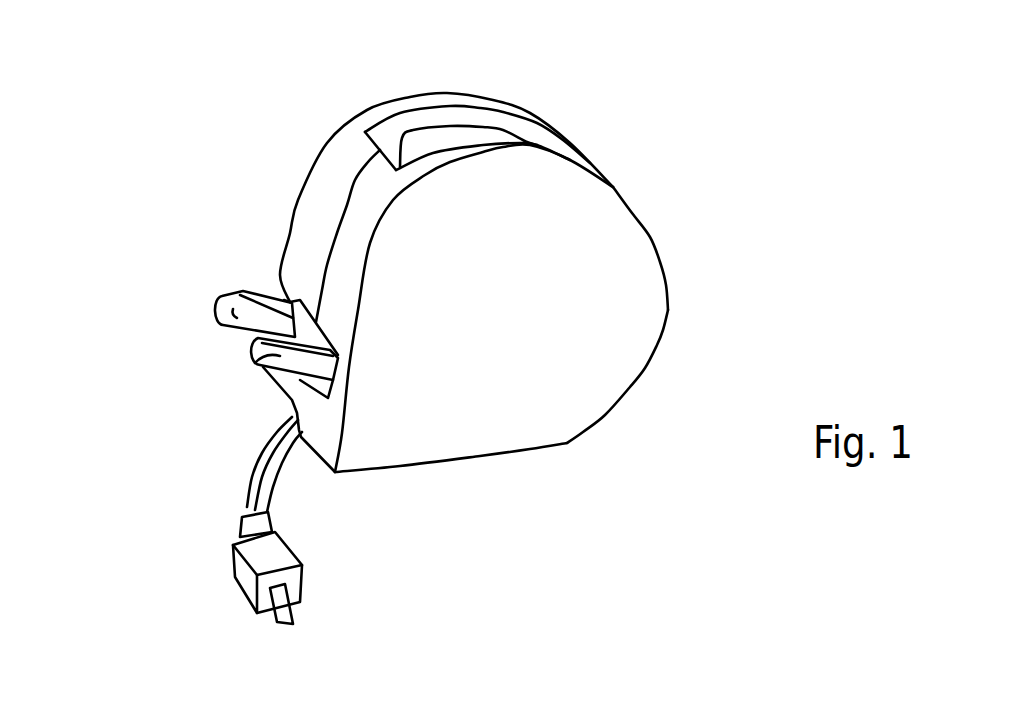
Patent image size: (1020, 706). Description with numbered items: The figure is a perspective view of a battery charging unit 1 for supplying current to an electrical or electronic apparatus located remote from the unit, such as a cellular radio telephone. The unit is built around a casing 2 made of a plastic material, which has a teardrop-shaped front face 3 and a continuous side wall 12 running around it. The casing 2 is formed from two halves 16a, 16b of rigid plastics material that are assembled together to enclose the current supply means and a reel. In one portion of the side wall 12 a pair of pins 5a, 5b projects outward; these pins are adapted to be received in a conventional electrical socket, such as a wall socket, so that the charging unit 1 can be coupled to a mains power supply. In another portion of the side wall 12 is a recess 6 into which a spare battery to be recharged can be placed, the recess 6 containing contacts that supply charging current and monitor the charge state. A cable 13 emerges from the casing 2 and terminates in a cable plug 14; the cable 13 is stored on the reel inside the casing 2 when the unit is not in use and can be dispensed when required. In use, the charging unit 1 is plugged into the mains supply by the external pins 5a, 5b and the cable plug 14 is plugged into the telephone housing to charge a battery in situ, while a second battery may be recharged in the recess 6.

The battery charging unit 1 is at (768, 105).
The casing 2 is at (632, 317).
The front face 3 is at (508, 387).
The pin 5a is at (250, 366).
The pin 5b is at (238, 313).
The recess 6 is at (482, 138).
The side wall 12 is at (337, 167).
The cable 13 is at (278, 477).
The cable plug 14 is at (290, 580).
The casing half 16a is at (623, 237).
The casing half 16b is at (424, 105).